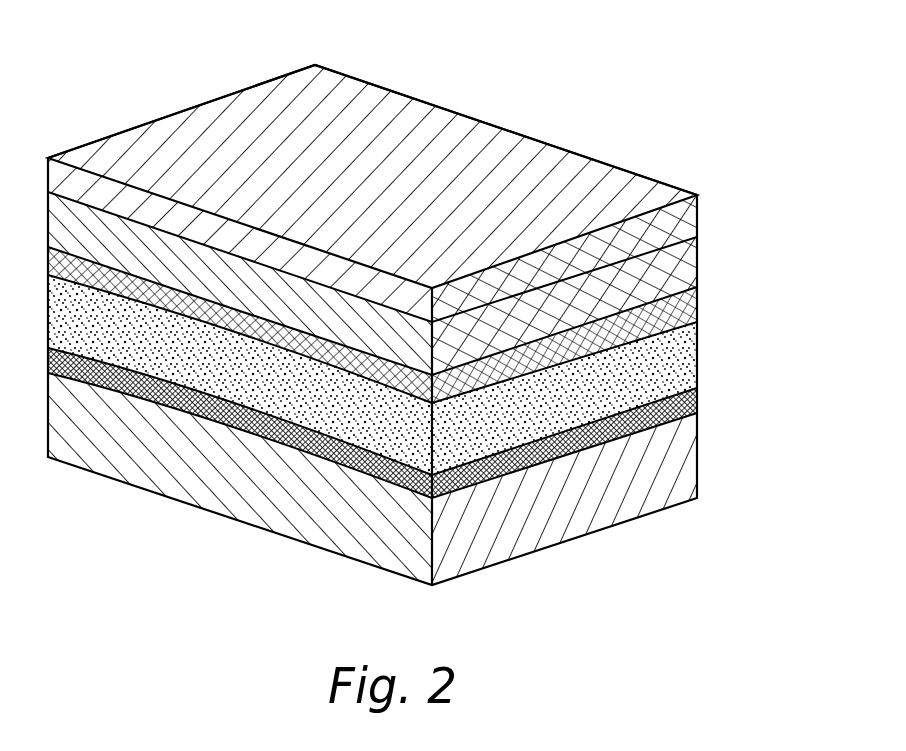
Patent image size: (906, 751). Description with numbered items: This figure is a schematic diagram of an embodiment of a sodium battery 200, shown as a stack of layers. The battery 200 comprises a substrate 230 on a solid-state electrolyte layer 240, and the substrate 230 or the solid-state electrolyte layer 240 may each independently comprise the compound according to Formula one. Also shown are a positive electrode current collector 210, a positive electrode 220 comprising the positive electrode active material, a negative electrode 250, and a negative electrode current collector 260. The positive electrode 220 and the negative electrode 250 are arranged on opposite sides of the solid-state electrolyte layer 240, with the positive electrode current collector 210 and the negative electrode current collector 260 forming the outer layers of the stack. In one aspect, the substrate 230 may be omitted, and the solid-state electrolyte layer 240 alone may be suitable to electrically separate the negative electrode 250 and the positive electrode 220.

The battery 200 is at (103, 85).
The positive electrode current collector 210 is at (660, 495).
The positive electrode 220 is at (660, 422).
The substrate 230 is at (672, 360).
The solid-state electrolyte layer 240 is at (685, 305).
The negative electrode 250 is at (683, 263).
The negative electrode current collector 260 is at (685, 220).